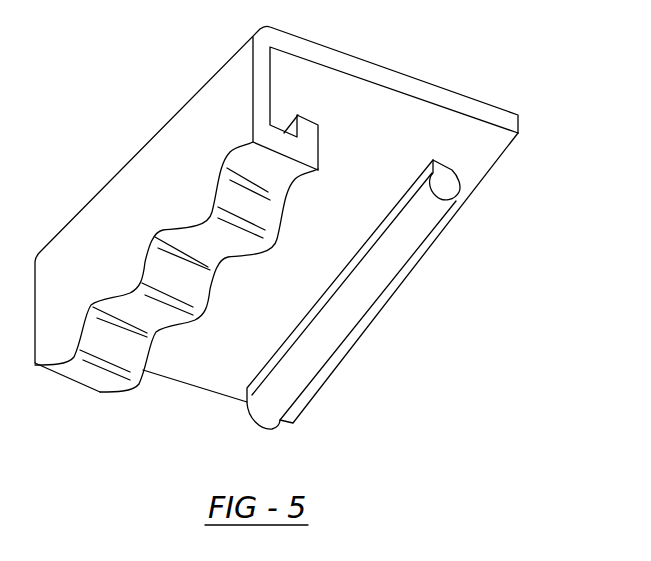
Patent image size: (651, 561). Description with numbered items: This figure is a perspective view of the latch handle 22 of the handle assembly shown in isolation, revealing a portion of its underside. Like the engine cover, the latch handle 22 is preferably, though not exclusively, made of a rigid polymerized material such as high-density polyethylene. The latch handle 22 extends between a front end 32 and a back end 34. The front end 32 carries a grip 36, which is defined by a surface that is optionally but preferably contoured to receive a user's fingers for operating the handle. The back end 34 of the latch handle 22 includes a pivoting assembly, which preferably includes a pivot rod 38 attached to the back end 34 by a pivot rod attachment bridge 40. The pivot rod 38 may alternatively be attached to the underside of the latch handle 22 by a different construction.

The latch handle 22 is at (357, 108).
The front end 32 is at (158, 173).
The back end 34 is at (492, 157).
The grip 36 is at (103, 363).
The pivot rod 38 is at (408, 238).
The pivot rod attachment bridge 40 is at (375, 243).